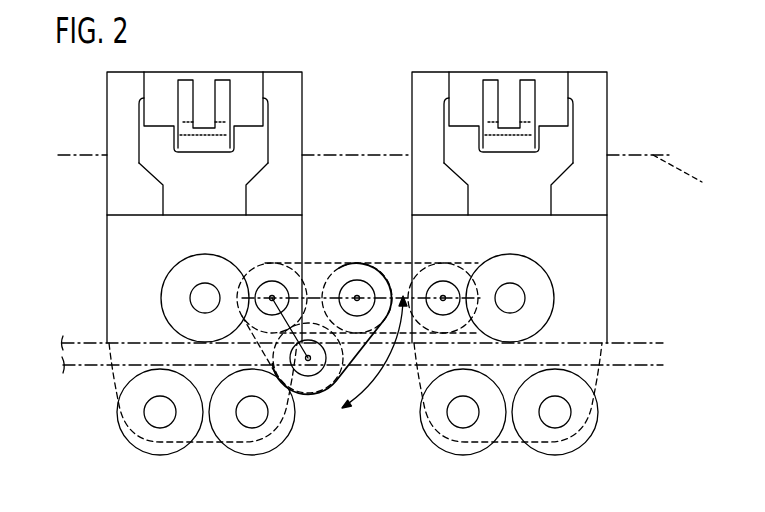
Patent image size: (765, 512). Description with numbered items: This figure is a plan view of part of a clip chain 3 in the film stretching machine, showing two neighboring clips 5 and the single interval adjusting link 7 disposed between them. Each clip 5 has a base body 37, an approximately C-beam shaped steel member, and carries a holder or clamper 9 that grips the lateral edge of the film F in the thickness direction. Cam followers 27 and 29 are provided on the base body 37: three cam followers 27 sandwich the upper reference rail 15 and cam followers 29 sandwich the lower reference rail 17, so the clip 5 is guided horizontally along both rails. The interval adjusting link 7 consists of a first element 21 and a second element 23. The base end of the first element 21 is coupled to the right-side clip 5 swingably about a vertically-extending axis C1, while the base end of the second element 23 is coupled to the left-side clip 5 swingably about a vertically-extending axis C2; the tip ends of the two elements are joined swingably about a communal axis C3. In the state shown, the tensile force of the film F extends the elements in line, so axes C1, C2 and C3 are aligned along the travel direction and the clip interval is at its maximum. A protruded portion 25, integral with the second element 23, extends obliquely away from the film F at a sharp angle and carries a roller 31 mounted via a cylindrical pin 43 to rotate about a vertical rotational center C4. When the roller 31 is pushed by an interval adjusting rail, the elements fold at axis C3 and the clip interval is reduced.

The clip chain 3 is at (383, 56).
The clip 5 is at (607, 135).
The holder (clamper) 9 is at (573, 120).
The base body 37 is at (607, 189).
The film F is at (685, 174).
The cam followers 27 is at (160, 298).
The cam followers 29 is at (314, 346).
The upper reference rail 15 is at (657, 342).
The lower reference rail 17 is at (658, 365).
The interval adjusting link 7 is at (363, 206).
The second element 23 is at (338, 262).
The first element 21 is at (394, 263).
The vertically-extending axis C1 is at (445, 280).
The vertically-extending axis C2 is at (273, 280).
The vertically-extending axis C3 is at (359, 280).
The rotational center C4 is at (308, 376).
The cylindrical pin 43 is at (296, 378).
The protruded portion 25 is at (313, 394).
The roller 31 is at (325, 388).